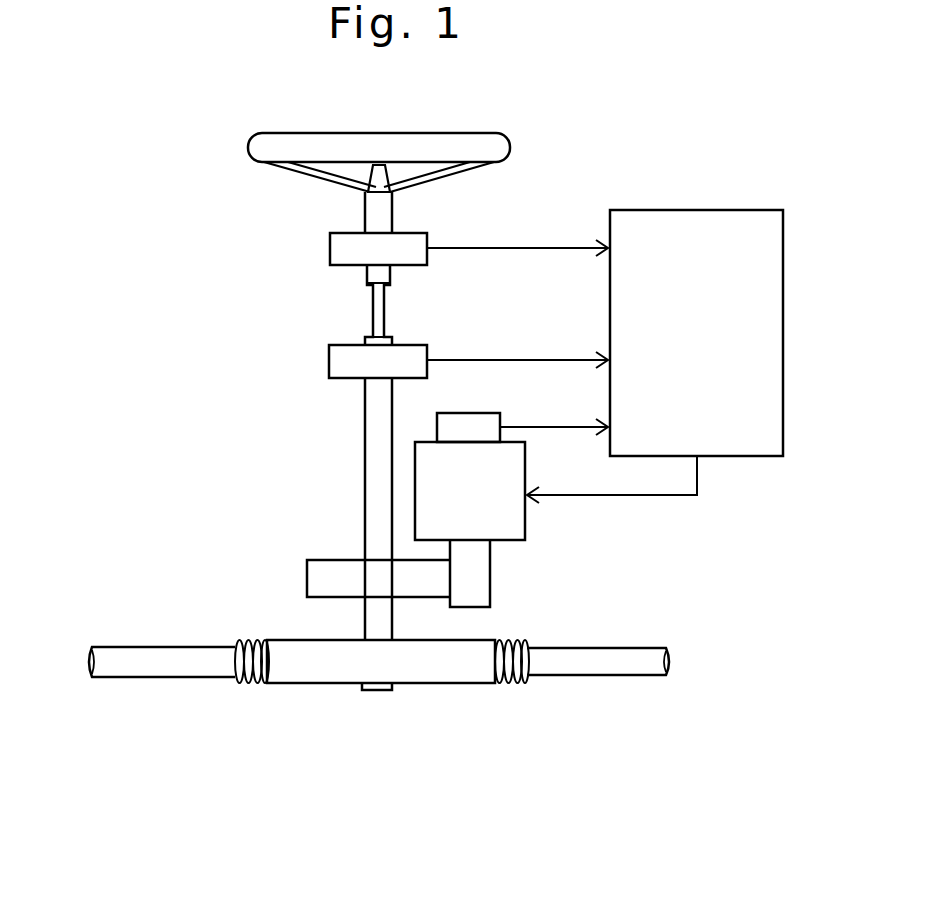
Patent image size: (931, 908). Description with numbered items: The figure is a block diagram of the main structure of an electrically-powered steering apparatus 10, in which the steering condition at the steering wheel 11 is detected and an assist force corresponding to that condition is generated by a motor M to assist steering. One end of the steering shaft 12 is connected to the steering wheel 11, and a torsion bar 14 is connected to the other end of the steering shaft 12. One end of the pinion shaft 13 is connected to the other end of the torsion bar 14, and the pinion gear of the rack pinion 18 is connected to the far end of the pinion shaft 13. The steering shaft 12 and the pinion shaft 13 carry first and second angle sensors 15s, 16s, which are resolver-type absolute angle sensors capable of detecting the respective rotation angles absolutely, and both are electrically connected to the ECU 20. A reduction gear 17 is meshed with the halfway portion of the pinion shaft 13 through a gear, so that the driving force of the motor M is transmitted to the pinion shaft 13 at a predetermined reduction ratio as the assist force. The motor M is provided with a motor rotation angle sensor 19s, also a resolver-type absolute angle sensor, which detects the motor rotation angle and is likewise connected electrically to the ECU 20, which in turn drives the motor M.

The electrically-powered steering apparatus 10 is at (158, 172).
The steering wheel 11 is at (510, 147).
The steering shaft 12 is at (388, 215).
The pinion shaft 13 is at (363, 465).
The torsion bar 14 is at (372, 308).
The first angle sensor 15s is at (330, 250).
The second angle sensor 16s is at (329, 360).
The reduction gear 17 is at (307, 578).
The rack pinion 18 is at (318, 673).
The motor rotation angle sensor 19s is at (487, 413).
The motor M is at (525, 530).
The ECU 20 is at (700, 210).